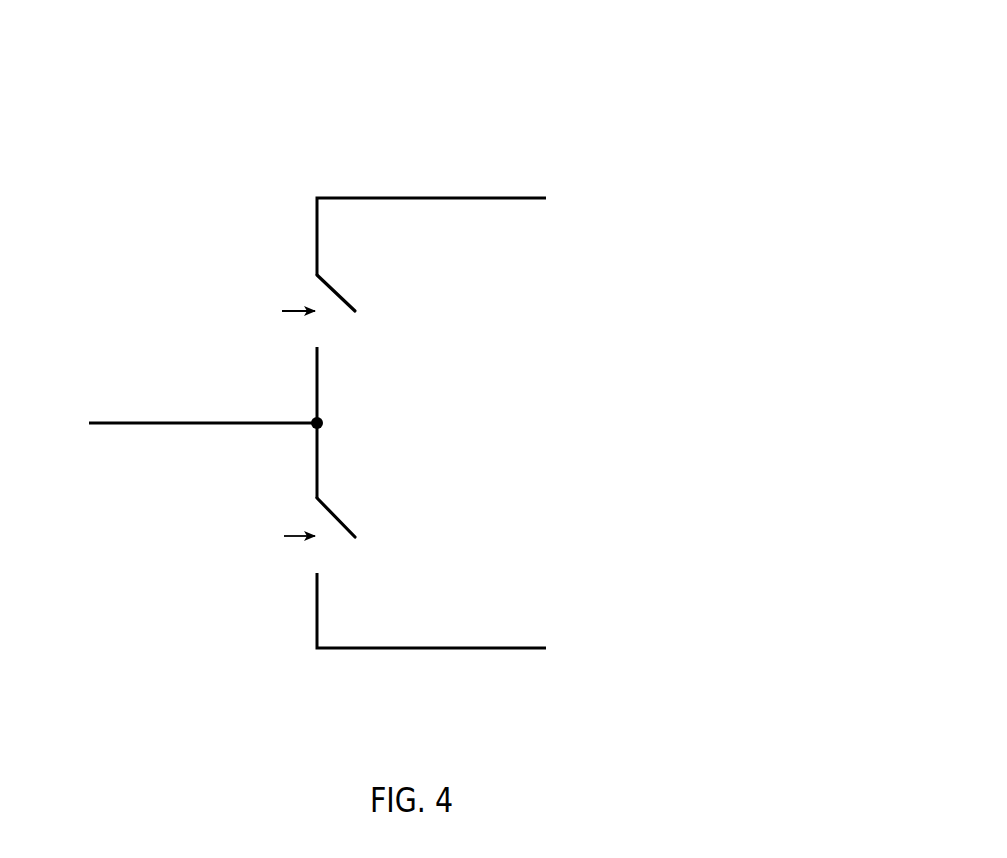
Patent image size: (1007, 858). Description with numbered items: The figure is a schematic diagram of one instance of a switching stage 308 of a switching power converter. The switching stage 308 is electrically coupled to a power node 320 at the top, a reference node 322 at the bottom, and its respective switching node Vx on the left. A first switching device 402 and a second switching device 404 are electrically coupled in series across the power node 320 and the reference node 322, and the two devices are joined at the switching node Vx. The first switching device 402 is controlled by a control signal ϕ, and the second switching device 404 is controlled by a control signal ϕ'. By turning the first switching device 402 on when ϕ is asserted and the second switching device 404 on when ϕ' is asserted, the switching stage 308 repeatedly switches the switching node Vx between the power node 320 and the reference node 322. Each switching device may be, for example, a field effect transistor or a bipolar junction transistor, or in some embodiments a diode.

The switching stage 308 is at (621, 62).
The power node 320 is at (450, 231).
The reference node 322 is at (450, 618).
The first switching device 402 is at (350, 277).
The second switching device 404 is at (360, 497).